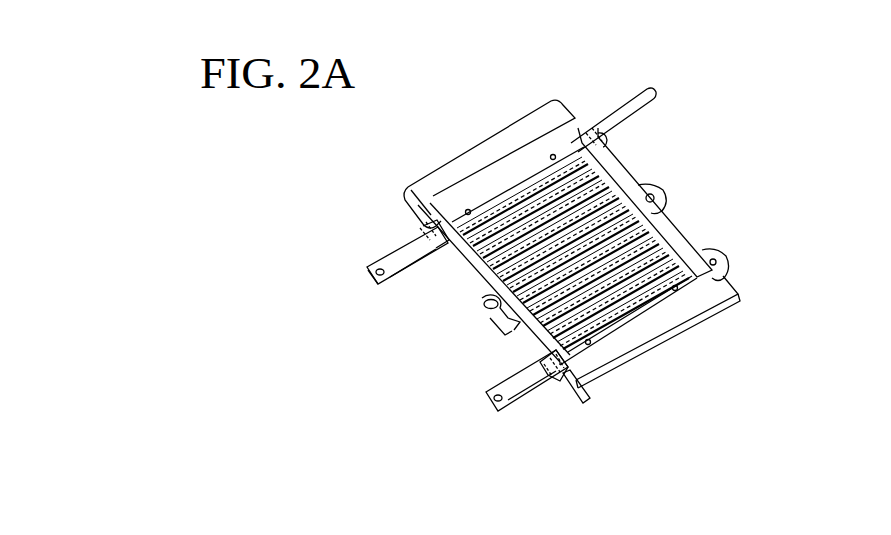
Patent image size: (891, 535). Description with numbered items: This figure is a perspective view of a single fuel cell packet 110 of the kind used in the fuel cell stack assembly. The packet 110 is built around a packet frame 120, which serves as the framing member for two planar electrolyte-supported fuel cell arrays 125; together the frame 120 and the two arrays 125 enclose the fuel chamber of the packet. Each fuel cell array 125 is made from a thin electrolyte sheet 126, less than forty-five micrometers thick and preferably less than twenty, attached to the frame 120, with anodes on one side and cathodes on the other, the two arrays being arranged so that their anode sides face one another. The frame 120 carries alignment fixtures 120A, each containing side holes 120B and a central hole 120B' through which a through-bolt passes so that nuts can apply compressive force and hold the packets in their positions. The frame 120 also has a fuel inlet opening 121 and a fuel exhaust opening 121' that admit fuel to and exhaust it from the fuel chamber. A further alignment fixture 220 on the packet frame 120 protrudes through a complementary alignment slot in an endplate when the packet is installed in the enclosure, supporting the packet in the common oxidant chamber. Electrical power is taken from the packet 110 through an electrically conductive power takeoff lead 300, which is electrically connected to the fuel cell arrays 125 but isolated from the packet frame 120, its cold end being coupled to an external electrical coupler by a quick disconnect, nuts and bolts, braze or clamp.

The fuel cell packet 110 is at (668, 369).
The packet frame 120 is at (735, 300).
The alignment fixture 120A is at (494, 330).
The side hole 120B is at (470, 170).
The central hole 120B' is at (446, 313).
The packet frame fuel inlet opening 121 is at (585, 426).
The packet frame fuel exhaust opening 121' is at (380, 250).
The fuel cell array 125 is at (722, 283).
The electrolyte sheet 126 is at (578, 118).
The alignment fixture 220 is at (666, 196).
The power takeoff lead 300 is at (487, 401).